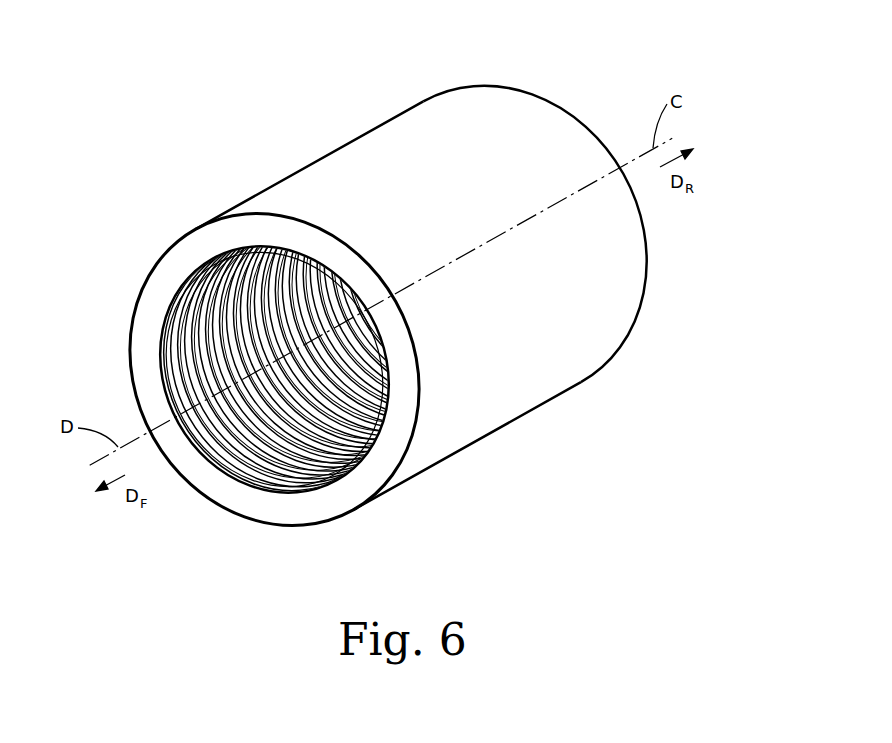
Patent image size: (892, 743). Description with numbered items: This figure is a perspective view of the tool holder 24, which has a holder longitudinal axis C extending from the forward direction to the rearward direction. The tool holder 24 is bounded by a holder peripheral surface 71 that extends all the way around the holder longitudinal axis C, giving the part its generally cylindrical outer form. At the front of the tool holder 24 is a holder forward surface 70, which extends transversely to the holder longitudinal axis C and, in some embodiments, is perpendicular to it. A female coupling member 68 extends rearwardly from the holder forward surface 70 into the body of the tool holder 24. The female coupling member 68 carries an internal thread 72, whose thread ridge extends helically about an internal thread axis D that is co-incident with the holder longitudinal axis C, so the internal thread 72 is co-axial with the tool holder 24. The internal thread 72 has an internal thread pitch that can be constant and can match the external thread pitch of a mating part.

The tool holder 24 is at (392, 332).
The female coupling member 68 is at (270, 471).
The holder forward surface 70 is at (168, 270).
The holder peripheral surface 71 is at (382, 153).
The internal thread 72 is at (296, 345).